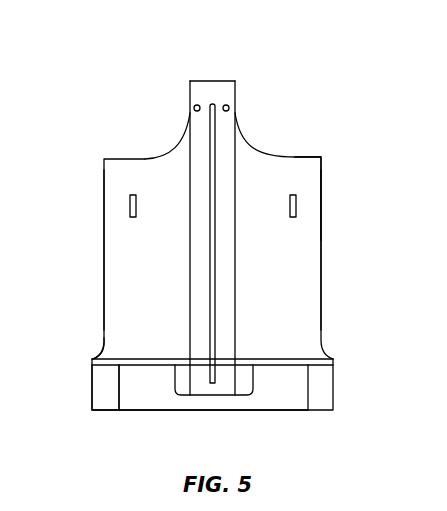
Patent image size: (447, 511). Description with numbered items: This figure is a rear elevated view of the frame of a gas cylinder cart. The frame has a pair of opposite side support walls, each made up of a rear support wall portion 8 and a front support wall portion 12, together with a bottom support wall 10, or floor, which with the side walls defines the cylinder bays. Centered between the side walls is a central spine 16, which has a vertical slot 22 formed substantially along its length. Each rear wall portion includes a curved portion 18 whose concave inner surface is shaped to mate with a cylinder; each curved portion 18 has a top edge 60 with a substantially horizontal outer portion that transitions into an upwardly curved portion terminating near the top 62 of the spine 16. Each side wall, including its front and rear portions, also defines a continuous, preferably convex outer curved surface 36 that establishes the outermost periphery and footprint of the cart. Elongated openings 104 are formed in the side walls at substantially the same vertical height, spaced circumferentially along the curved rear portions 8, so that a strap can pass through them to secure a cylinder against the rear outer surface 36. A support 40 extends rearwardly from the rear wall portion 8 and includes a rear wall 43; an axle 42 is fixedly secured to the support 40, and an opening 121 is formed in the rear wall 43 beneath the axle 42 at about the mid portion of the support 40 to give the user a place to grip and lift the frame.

The rear support wall portion 8 is at (308, 194).
The bottom support wall 10 is at (143, 412).
The front support wall portion 12 is at (335, 362).
The central spine 16 is at (229, 134).
The curved portion 18 is at (122, 266).
The vertical slot 22 is at (208, 195).
The outer curved surface 36 is at (305, 262).
The support 40 is at (115, 400).
The axle 42 is at (129, 362).
The rear wall 43 is at (192, 403).
The top edge 60 is at (301, 156).
The top of the spine 62 is at (203, 81).
The opening 104 is at (130, 206).
The opening 121 is at (243, 382).